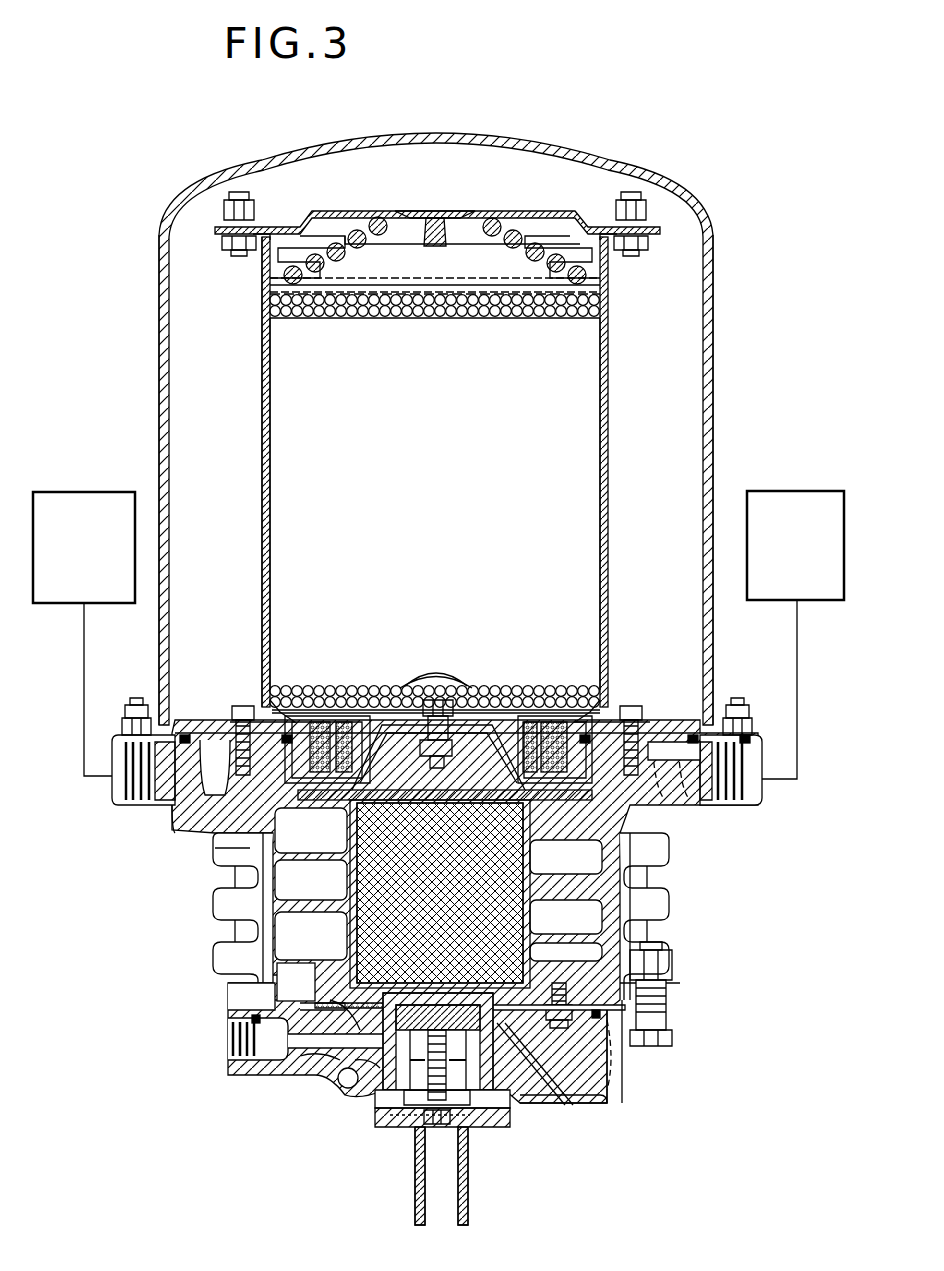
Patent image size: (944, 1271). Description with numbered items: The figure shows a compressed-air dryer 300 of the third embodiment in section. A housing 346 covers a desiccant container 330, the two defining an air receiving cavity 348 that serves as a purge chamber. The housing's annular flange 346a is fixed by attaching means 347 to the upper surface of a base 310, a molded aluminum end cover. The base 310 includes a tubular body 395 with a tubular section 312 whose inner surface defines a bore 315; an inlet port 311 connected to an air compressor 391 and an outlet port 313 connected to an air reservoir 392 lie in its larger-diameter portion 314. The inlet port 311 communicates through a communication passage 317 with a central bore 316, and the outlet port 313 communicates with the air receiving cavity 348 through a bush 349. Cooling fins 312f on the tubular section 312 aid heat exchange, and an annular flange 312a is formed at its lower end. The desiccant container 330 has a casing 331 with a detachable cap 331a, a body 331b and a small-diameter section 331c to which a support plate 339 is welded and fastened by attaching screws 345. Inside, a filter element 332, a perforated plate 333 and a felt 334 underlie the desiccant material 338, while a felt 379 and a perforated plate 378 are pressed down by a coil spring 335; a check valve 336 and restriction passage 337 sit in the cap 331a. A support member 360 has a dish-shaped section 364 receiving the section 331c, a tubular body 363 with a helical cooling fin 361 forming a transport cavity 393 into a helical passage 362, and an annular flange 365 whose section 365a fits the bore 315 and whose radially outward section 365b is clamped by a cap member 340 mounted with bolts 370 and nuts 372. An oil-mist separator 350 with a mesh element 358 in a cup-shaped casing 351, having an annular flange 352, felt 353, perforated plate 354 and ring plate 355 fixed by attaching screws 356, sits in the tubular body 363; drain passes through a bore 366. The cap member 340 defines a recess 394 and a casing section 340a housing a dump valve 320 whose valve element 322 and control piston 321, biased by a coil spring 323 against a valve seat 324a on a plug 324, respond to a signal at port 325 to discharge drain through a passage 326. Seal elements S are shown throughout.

The compressed-air dryer 300 is at (473, 420).
The base 310 is at (432, 889).
The inlet port 311 is at (115, 761).
The tubular section 312 is at (432, 908).
The annular flange 312a is at (676, 985).
The cooling fins 312f is at (215, 878).
The outlet port 313 is at (742, 805).
The larger-diameter portion 314 is at (645, 850).
The bore 315 is at (645, 930).
The central bore 316 is at (628, 718).
The communication passage 317 is at (212, 745).
The dump valve 320 is at (468, 1178).
The control piston 321 is at (335, 1080).
The valve element 322 is at (412, 1160).
The coil spring 323 is at (428, 1108).
The plug 324 is at (505, 1125).
The valve seat 324a is at (430, 1130).
The passage or port 325 is at (233, 1048).
The passage 326 is at (512, 1110).
The desiccant container 330 is at (422, 438).
The casing 331 is at (437, 481).
The cap 331a is at (335, 215).
The body 331b is at (262, 505).
The small-diameter section 331c is at (622, 725).
The filter element 332 is at (378, 688).
The perforated plate 333 is at (538, 718).
The felt 334 is at (455, 708).
The coil spring 335 is at (375, 222).
The check valve 336 is at (436, 210).
The restriction passage 337 is at (527, 230).
The desiccant material 338 is at (407, 518).
The support plate 339 is at (705, 690).
The cap member 340 is at (452, 1110).
The casing section 340a is at (530, 1045).
The attaching screws 345 is at (243, 705).
The housing 346 is at (168, 370).
The annular flange 346a is at (122, 736).
The attaching means 347 is at (143, 702).
The air receiving cavity 348 is at (632, 398).
The bush 349 is at (655, 738).
The oil-mist separator 350 is at (478, 792).
The cup-shaped casing 351 is at (311, 830).
The annular flange 352 is at (526, 1012).
The felt 353 is at (345, 1105).
The perforated plate 354 is at (310, 1095).
The ring plate 355 is at (300, 1082).
The attaching screws 356 is at (558, 1028).
The mesh element 358 is at (402, 835).
The support member 360 is at (340, 935).
The helical cooling fin 361 is at (311, 881).
The helical passage 362 is at (583, 866).
The tubular body 363 is at (566, 930).
The dish-shaped section 364 is at (218, 848).
The annular flange 365 is at (616, 1085).
The section 365a is at (612, 1060).
The radially outward section 365b is at (240, 1000).
The bore 366 is at (262, 977).
The bolts 370 is at (690, 994).
The nuts 372 is at (666, 953).
The perforated plate 378 is at (445, 308).
The felt 379 is at (372, 308).
The air compressor 391 is at (90, 492).
The air reservoir 392 is at (788, 491).
The transport cavity 393 is at (232, 892).
The recess 394 is at (585, 1105).
The tubular body 395 is at (166, 833).
The seal elements S is at (185, 733).